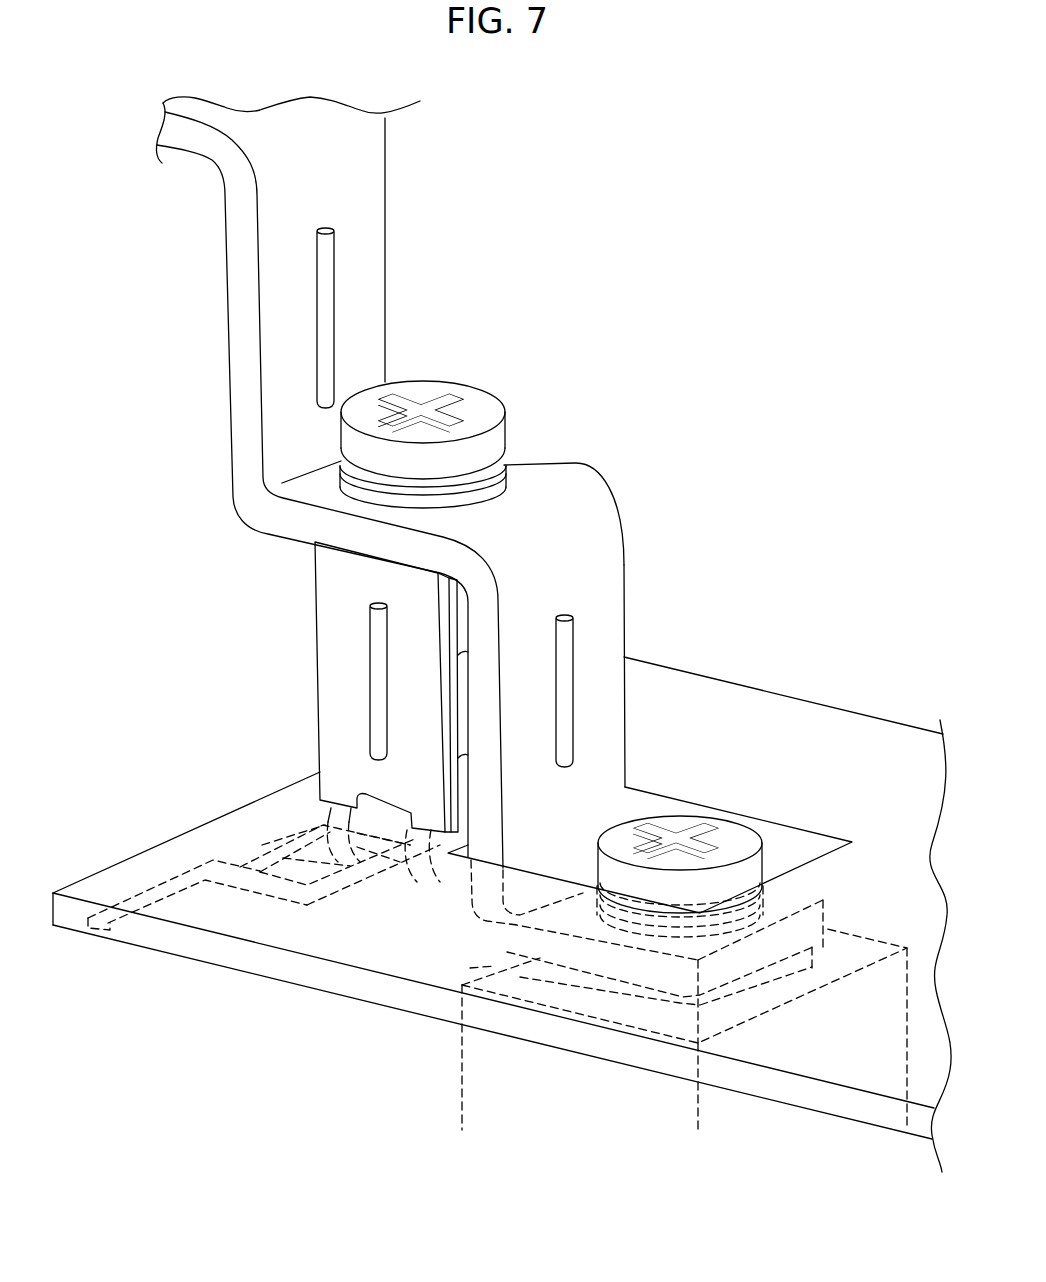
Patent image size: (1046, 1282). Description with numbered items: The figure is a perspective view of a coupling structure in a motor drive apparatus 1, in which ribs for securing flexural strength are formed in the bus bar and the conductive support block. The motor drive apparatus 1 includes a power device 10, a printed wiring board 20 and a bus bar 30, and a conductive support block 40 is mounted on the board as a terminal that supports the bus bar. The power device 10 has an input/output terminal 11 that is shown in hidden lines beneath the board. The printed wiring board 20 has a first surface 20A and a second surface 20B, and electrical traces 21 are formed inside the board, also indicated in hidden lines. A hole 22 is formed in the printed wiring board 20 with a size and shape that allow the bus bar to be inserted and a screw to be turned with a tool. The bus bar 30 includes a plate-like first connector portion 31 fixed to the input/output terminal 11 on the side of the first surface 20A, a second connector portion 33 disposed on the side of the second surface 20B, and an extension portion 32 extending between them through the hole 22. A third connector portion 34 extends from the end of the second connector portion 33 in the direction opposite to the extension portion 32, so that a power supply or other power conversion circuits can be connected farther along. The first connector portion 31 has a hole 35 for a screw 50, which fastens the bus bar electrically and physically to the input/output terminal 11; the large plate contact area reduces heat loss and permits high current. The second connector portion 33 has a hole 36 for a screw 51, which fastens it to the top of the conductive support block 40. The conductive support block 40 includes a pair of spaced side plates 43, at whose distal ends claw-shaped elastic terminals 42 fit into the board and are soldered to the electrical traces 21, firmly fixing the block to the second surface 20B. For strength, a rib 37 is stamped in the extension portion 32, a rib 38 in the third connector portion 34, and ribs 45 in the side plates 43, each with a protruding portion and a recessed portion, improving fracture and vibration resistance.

The motor drive apparatus 1 is at (719, 213).
The power device 10 is at (495, 966).
The input/output terminal 11 is at (823, 930).
The printed wiring board 20 is at (381, 1057).
The first surface 20A is at (377, 1003).
The second surface 20B is at (360, 950).
The electrical traces 21 is at (293, 841).
The hole 22 is at (795, 840).
The bus bar 30 is at (391, 197).
The first connector portion 31 is at (664, 951).
The extension portion 32 is at (612, 584).
The second connector portion 33 is at (547, 483).
The third connector portion 34 is at (377, 278).
The hole 35 is at (773, 870).
The hole 36 is at (506, 462).
The rib 37 is at (563, 673).
The rib 38 is at (330, 338).
The conductive support block 40 is at (310, 622).
The terminals for the printed wiring board 42 is at (278, 897).
The side plates 43 is at (350, 741).
The ribs 45 is at (378, 680).
The screw 50 is at (667, 812).
The screw 51 is at (481, 391).